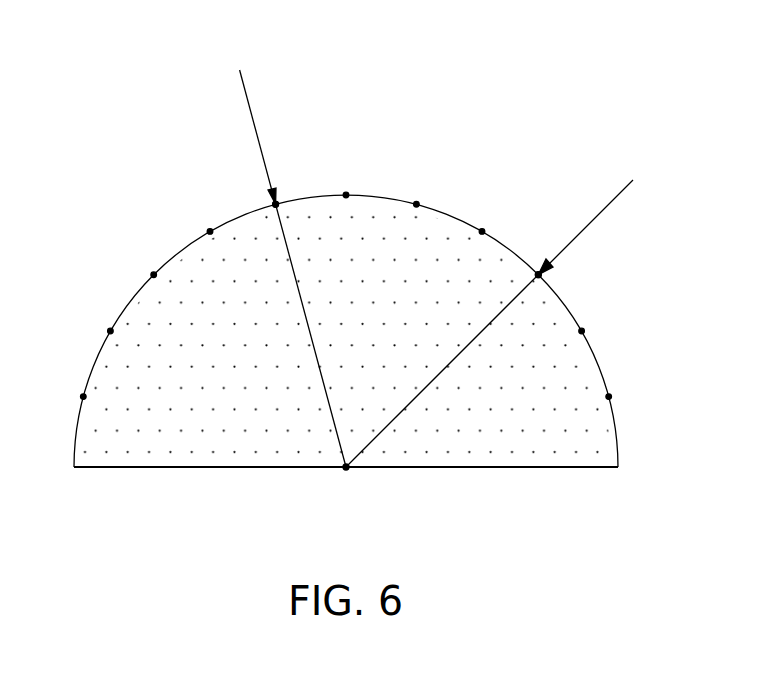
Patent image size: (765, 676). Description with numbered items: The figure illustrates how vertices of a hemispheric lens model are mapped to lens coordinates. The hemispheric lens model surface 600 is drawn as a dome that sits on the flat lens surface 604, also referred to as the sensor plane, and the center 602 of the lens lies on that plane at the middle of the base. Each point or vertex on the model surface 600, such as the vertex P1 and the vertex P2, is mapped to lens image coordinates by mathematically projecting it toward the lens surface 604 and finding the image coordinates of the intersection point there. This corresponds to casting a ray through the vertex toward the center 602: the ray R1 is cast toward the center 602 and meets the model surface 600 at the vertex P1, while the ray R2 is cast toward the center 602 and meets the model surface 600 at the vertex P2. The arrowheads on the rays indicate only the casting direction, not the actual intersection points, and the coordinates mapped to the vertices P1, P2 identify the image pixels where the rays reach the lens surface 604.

The hemispheric lens model surface 600 is at (448, 212).
The center of the lens 602 is at (345, 471).
The lens surface 604 is at (481, 470).
The ray R1 is at (287, 254).
The ray R2 is at (497, 306).
The vertex P1 is at (256, 190).
The vertex P2 is at (536, 250).